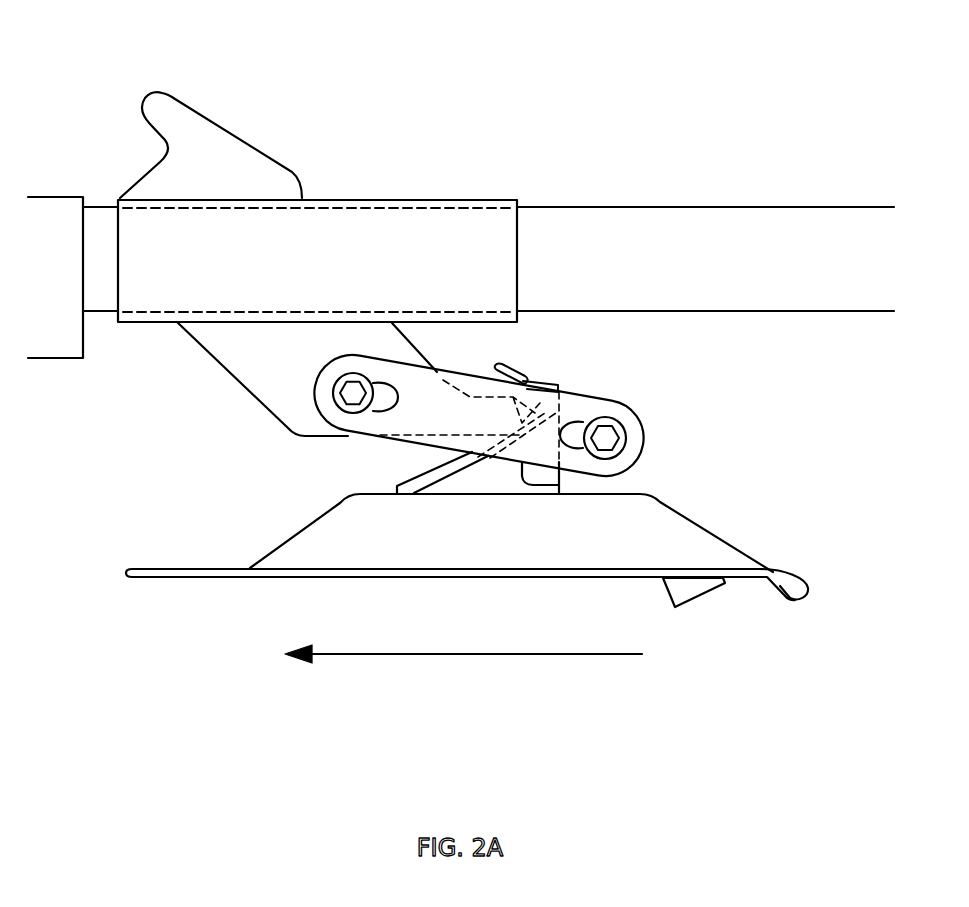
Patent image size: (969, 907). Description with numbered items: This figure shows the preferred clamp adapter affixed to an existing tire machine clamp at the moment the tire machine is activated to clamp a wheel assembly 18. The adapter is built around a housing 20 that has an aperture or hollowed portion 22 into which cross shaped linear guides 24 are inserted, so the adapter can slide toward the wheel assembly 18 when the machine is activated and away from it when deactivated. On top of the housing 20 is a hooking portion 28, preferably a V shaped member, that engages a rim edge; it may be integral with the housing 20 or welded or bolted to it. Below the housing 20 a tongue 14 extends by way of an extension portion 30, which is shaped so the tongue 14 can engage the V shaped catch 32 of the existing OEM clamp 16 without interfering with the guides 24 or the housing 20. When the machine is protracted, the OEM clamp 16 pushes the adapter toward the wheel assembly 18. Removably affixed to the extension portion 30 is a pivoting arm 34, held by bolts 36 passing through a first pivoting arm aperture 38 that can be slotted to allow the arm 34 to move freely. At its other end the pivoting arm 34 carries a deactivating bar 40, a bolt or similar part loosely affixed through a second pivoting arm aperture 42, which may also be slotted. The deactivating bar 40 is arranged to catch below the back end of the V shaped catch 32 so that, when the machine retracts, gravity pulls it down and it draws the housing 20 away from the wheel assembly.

The tongue 14 is at (535, 407).
The OEM clamp 16 is at (262, 621).
The wheel assembly 18 is at (560, 658).
The housing 20 is at (380, 200).
The hollowed portion 22 is at (437, 245).
The cross shaped linear guides 24 is at (682, 205).
The hooking portion 28 is at (215, 123).
The extension portion 30 is at (217, 365).
The V shaped catch 32 is at (510, 370).
The pivoting arm 34 is at (417, 443).
The bolts 36 is at (337, 397).
The first pivoting arm aperture 38 is at (377, 410).
The deactivating bar 40 is at (620, 438).
The second pivoting arm aperture 42 is at (580, 420).